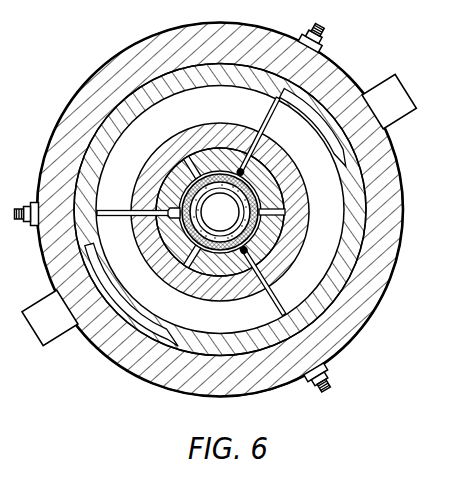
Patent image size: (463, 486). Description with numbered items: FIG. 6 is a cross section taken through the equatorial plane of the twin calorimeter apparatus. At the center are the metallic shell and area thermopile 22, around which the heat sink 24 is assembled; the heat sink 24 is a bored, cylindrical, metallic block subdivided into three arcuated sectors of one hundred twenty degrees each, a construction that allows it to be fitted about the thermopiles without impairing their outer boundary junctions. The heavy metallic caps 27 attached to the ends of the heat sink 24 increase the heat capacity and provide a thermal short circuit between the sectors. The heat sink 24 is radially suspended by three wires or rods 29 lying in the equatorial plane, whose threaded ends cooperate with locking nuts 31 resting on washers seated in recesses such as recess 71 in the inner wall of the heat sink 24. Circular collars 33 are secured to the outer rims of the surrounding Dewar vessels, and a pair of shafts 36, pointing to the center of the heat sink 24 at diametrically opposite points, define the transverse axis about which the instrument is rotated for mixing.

The metallic shell and area thermopile 22 is at (220, 212).
The heat sink 24 is at (219, 268).
The metallic cap 27 is at (289, 242).
The wire or rod 29 is at (270, 122).
The locking nut 31 is at (330, 374).
The circular collar 33 is at (149, 99).
The shaft 36 is at (409, 97).
The recess 71 is at (236, 168).